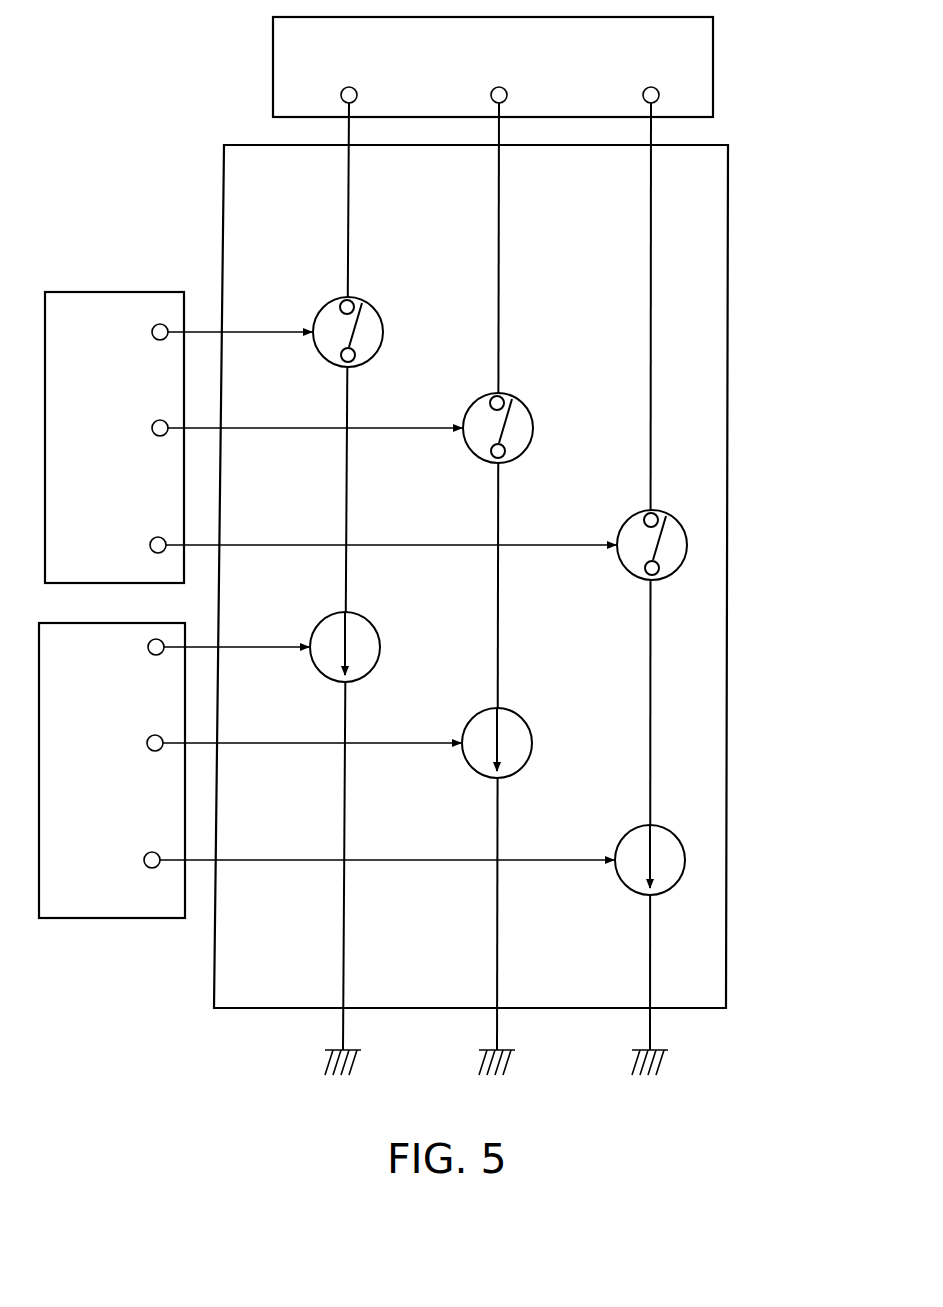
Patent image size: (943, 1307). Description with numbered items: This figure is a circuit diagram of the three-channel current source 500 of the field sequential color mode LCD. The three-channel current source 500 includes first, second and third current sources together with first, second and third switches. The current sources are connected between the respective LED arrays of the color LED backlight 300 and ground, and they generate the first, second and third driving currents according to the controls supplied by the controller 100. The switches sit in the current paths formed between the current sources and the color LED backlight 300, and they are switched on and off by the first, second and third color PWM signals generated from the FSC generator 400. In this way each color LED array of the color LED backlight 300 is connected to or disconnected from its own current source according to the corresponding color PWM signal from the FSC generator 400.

The controller 100 is at (112, 787).
The color LED backlight 300 is at (493, 67).
The FSC generator 400 is at (114, 424).
The 3-channel current source 500 is at (727, 612).